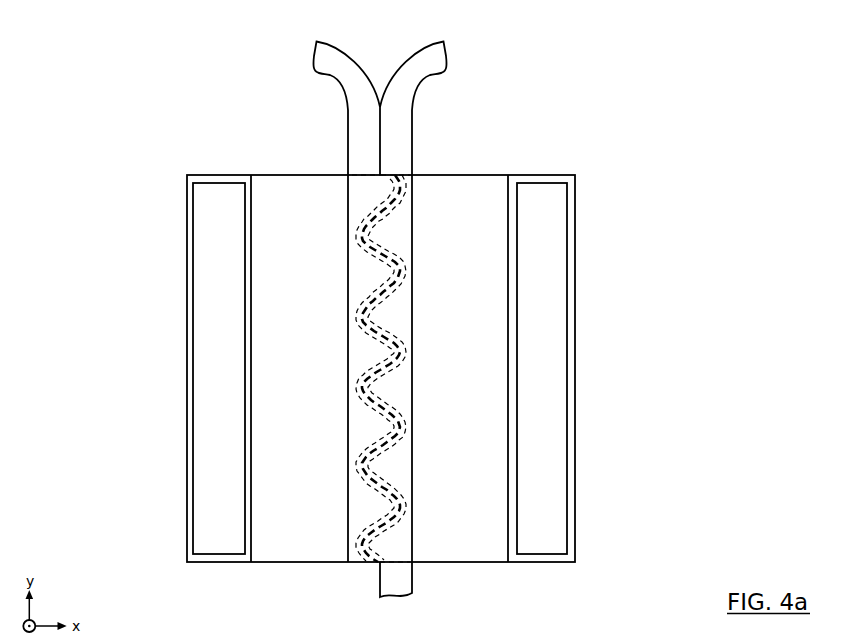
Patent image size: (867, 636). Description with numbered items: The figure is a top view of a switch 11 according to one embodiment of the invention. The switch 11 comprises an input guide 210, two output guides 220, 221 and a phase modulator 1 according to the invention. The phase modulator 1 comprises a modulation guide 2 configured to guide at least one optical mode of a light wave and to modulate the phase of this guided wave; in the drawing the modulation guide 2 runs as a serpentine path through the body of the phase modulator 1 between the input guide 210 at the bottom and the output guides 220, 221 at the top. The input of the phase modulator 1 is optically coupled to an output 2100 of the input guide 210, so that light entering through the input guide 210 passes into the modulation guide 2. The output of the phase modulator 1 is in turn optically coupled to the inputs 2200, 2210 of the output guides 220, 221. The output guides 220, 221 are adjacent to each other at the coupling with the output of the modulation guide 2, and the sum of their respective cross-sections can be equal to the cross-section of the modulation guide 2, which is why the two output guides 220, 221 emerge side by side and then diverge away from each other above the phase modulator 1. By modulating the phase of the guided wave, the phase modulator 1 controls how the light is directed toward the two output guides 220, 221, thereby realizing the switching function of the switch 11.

The phase modulator 1 is at (605, 576).
The switch 11 is at (278, 73).
The modulation guide 2 is at (403, 542).
The output guide 220 is at (358, 118).
The output guide 221 is at (398, 121).
The input of the output guide 2200 is at (362, 174).
The input of the output guide 2210 is at (410, 173).
The input guide 210 is at (388, 587).
The output of the input guide 2100 is at (400, 562).